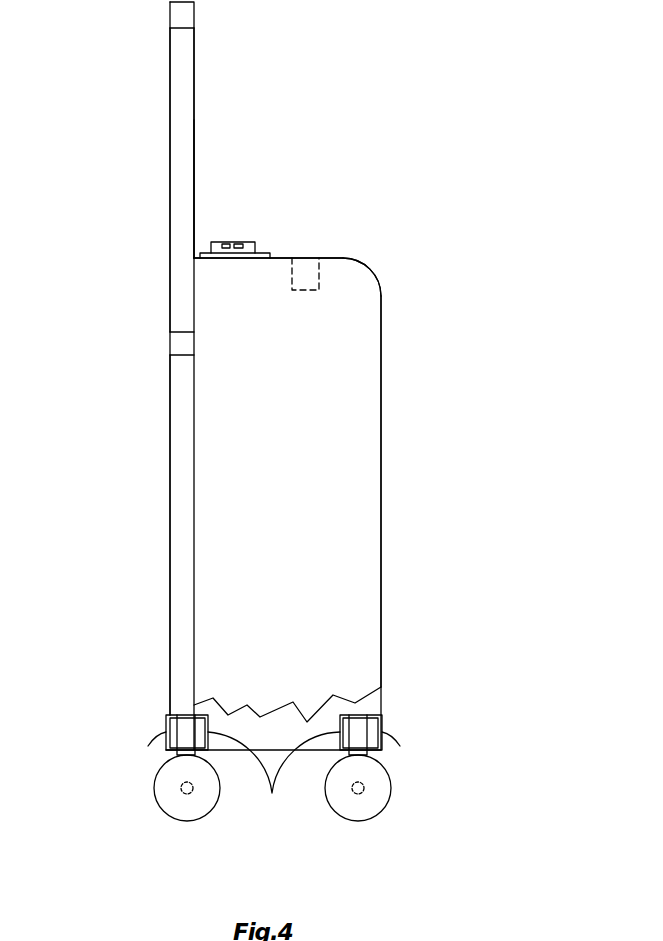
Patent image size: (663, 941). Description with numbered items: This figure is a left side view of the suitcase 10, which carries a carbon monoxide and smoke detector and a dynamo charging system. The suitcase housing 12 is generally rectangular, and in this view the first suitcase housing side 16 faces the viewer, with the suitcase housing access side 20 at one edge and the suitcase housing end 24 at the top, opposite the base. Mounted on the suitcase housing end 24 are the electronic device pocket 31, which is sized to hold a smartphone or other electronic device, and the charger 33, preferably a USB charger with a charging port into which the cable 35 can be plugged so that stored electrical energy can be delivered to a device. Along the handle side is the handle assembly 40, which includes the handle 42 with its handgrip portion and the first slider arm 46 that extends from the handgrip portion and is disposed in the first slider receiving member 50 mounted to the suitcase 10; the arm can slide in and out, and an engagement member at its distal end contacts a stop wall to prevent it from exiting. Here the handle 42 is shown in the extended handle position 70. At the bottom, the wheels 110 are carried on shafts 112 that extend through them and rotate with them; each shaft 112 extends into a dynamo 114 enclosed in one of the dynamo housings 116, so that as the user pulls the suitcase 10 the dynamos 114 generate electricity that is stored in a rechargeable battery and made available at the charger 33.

The suitcase 10 is at (315, 424).
The suitcase housing 12 is at (331, 258).
The first suitcase housing side 16 is at (350, 383).
The suitcase housing access side 20 is at (383, 543).
The suitcase housing end 24 is at (343, 258).
The electronic device pocket 31 is at (268, 250).
The charger 33 is at (224, 247).
The cable 35 is at (308, 278).
The handle assembly 40 is at (182, 80).
The handle 42 is at (180, 170).
The first slider arm 46 is at (180, 149).
The first slider receiving member 50 is at (182, 476).
The extended handle position 70 is at (203, 191).
The wheels 110 is at (175, 805).
The shafts 112 is at (182, 790).
The dynamo 114 is at (168, 733).
The dynamo housings 116 is at (274, 780).